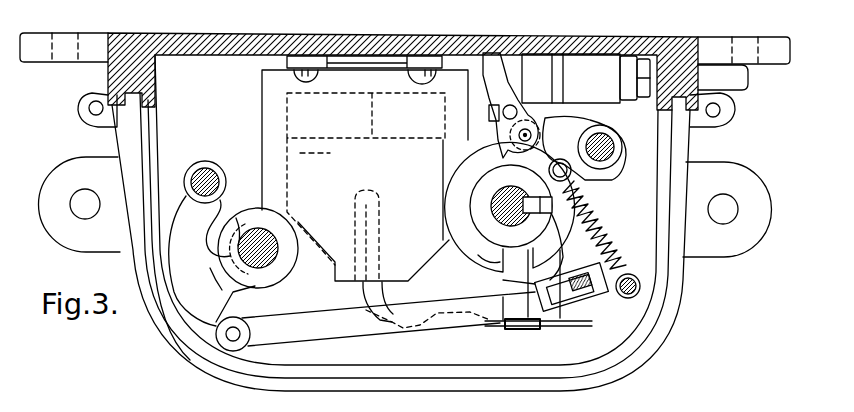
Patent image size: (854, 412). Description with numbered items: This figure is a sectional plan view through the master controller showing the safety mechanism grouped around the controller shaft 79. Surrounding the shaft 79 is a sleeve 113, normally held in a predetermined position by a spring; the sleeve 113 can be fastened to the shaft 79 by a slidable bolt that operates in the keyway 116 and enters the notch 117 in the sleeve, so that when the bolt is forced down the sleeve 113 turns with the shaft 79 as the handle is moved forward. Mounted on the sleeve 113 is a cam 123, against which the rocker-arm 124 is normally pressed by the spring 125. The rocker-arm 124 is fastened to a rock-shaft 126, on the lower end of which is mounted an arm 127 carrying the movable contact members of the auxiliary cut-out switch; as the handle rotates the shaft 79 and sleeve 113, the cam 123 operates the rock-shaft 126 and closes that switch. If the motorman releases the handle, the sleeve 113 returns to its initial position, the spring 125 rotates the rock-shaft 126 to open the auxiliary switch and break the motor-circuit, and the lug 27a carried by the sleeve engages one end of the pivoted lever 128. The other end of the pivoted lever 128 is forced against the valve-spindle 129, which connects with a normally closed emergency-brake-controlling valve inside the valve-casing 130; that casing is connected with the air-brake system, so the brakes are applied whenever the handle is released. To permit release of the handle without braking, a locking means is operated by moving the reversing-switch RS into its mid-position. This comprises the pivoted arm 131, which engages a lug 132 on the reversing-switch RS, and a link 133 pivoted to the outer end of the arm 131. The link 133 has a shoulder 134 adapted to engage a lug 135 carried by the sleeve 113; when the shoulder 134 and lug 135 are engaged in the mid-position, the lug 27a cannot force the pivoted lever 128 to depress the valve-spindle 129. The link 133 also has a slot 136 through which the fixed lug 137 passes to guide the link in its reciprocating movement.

The lug 27a is at (541, 162).
The shaft 79 is at (500, 200).
The sleeve 113 is at (488, 230).
The keyway 116 is at (602, 238).
The notch 117 is at (600, 212).
The cam 123 is at (462, 217).
The rocker-arm 124 is at (620, 93).
The spring 125 is at (620, 263).
The rock-shaft 126 is at (617, 139).
The arm 127 is at (607, 193).
The pivoted lever 128 is at (500, 78).
The valve-spindle 129 is at (548, 127).
The valve-casing 130 is at (642, 37).
The pivoted arm 131 is at (182, 212).
The lug 132 is at (236, 284).
The link 133 is at (328, 328).
The shoulder 134 is at (530, 292).
The lug 135 is at (525, 282).
The slot 136 is at (592, 308).
The fixed lug 137 is at (578, 307).
The reversing-switch RS is at (250, 206).